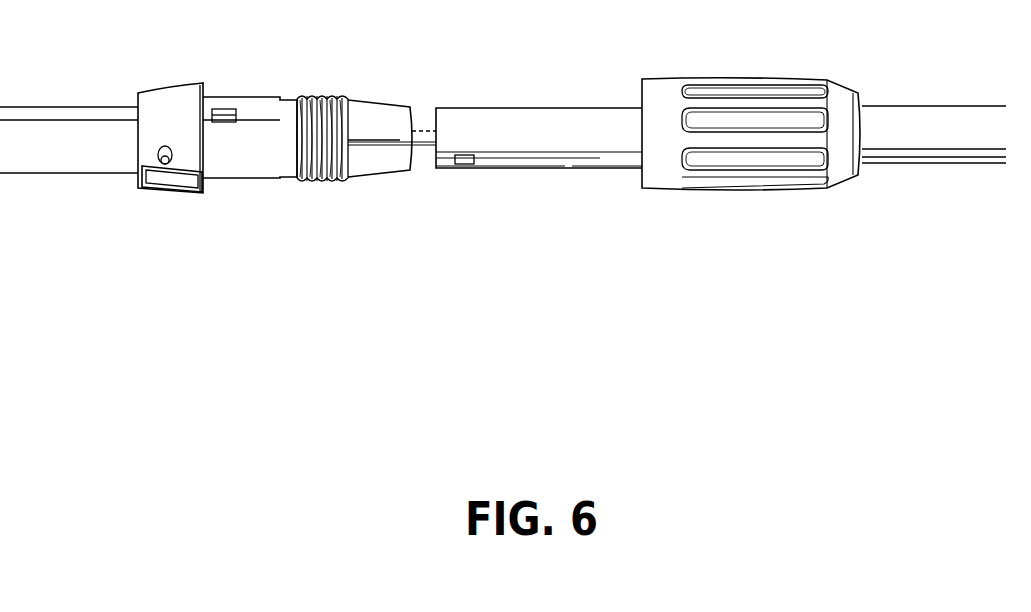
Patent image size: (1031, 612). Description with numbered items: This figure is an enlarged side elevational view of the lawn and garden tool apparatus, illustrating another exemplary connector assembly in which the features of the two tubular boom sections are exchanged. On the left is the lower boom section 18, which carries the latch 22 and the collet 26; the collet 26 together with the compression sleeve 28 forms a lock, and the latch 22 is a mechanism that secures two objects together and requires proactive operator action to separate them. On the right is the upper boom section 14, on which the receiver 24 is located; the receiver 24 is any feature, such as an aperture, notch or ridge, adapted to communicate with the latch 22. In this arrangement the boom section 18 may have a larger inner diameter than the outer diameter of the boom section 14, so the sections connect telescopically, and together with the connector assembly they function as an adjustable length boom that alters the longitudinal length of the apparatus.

The upper boom section 14 is at (915, 128).
The lower boom section 18 is at (50, 132).
The latch 22 is at (190, 185).
The receiver 24 is at (465, 160).
The collet 26 is at (383, 119).
The compression sleeve 28 is at (743, 103).